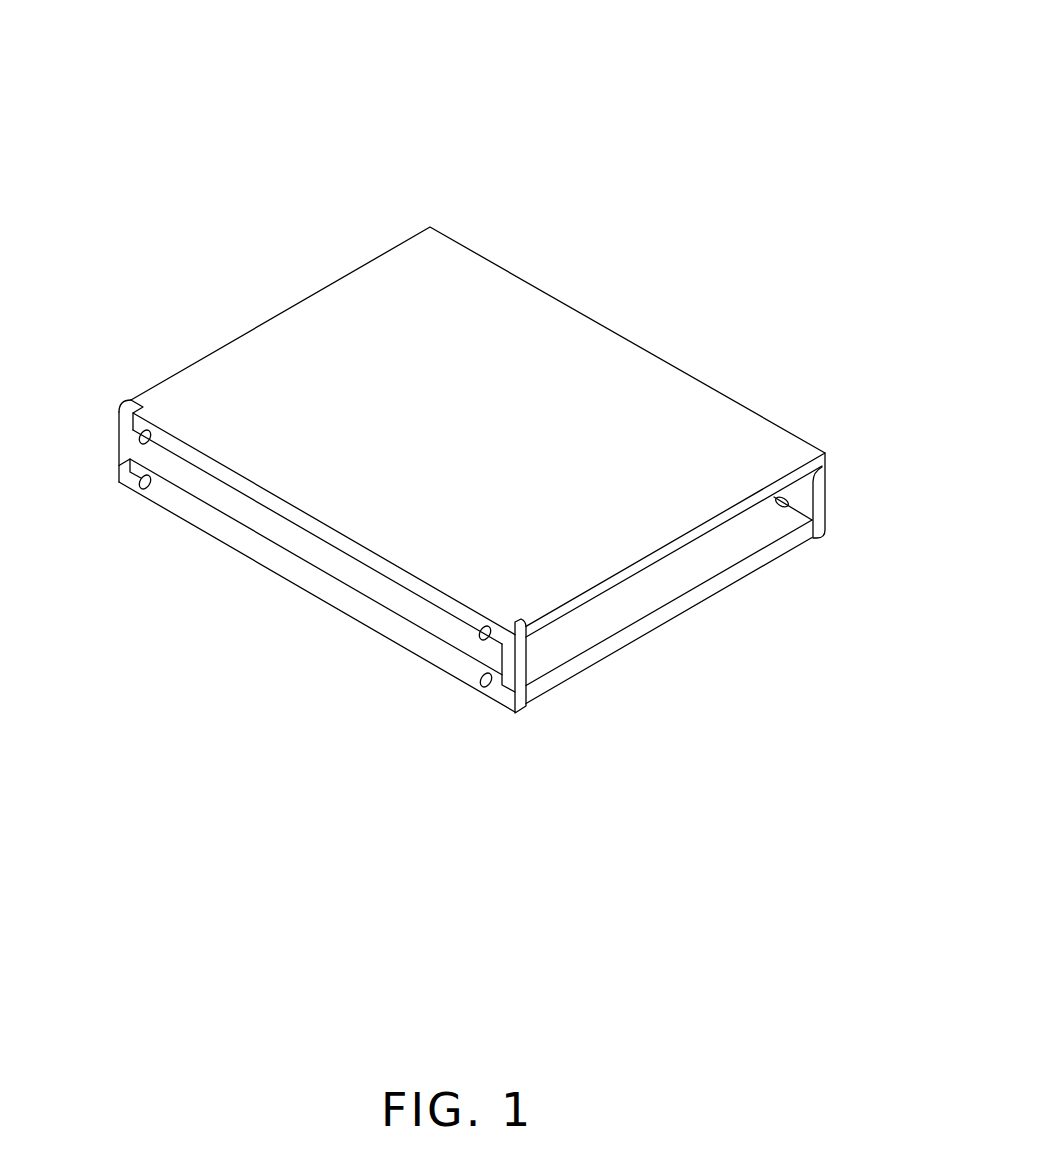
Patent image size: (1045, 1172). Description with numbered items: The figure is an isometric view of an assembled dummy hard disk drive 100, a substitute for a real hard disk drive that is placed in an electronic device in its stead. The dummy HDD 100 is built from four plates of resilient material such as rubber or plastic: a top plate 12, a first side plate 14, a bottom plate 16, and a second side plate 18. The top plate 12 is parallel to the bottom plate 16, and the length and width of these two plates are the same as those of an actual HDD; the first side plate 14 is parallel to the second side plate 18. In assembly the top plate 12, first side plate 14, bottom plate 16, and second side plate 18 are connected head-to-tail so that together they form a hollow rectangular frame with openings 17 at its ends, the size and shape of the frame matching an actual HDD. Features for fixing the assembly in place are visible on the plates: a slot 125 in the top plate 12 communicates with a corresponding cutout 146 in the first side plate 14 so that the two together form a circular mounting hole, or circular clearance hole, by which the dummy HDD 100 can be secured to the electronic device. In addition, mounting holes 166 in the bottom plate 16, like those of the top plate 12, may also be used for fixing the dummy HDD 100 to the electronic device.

The dummy hard disk drive 100 is at (613, 73).
The top plate 12 is at (310, 318).
The slot 125 is at (141, 431).
The first side plate 14 is at (350, 572).
The cutout 146 is at (137, 436).
The mounting hole 166 is at (147, 488).
The bottom plate 16 is at (665, 622).
The opening 17 is at (735, 550).
The second side plate 18 is at (800, 497).